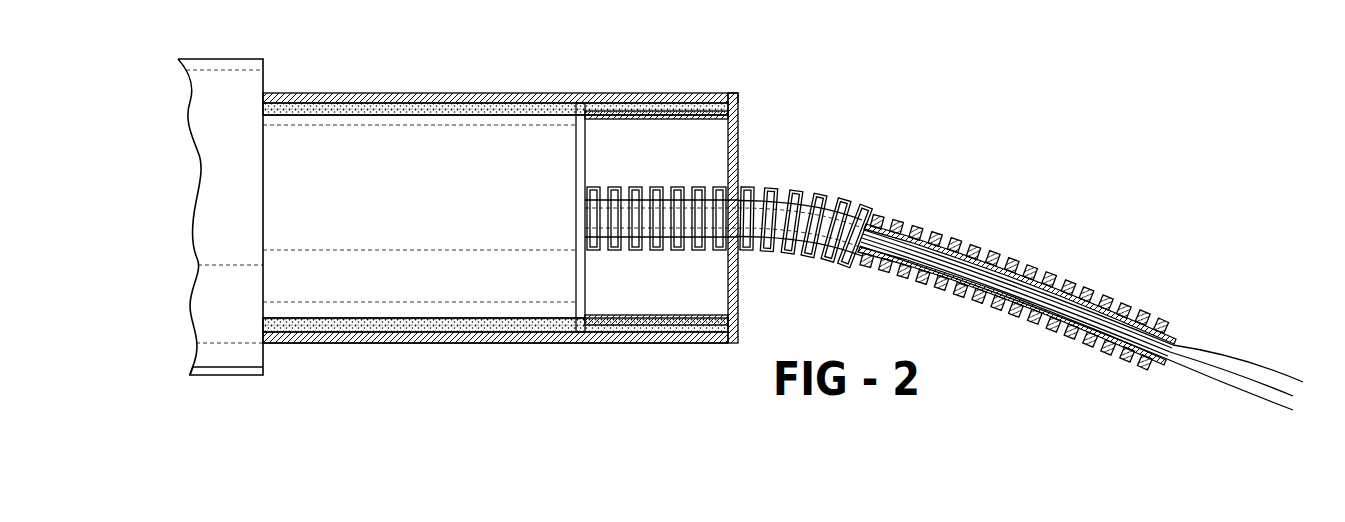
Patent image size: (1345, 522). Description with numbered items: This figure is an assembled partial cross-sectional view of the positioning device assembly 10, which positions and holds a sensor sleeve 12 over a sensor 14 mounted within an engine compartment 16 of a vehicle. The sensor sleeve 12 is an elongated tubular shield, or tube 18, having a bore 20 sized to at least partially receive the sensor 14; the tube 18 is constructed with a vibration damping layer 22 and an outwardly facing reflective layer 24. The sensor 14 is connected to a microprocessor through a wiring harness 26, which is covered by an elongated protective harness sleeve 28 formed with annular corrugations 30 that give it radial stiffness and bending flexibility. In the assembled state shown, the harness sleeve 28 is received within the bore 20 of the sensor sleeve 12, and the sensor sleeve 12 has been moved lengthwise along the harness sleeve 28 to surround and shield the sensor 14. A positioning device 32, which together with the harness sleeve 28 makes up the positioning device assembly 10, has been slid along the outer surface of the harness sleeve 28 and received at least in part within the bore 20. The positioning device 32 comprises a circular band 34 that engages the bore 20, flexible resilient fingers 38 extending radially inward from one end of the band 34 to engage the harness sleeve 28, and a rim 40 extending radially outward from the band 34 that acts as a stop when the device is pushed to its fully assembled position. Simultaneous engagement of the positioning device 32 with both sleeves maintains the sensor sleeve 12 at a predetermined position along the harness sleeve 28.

The positioning device assembly 10 is at (957, 99).
The sensor sleeve 12 is at (328, 94).
The sensor 14 is at (403, 137).
The engine compartment 16 is at (830, 133).
The tube 18 is at (680, 343).
The bore 20 is at (582, 102).
The vibration damping layer 22 is at (338, 326).
The reflective layer 24 is at (538, 343).
The wiring harness 26 is at (1248, 397).
The harness sleeve 28 is at (857, 204).
The annular corrugations 30 is at (995, 244).
The positioning device 32 is at (782, 102).
The band 34 is at (655, 100).
The fingers 38 is at (742, 148).
The rim 40 is at (734, 93).